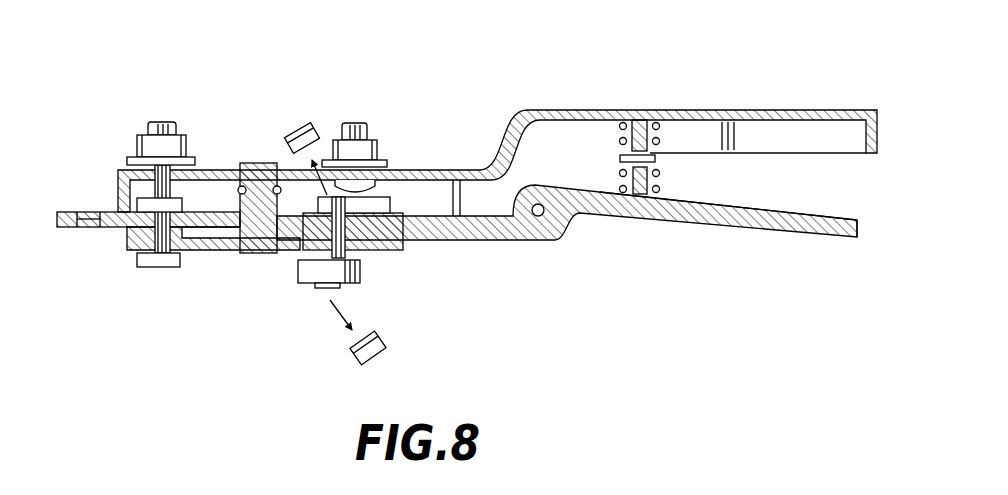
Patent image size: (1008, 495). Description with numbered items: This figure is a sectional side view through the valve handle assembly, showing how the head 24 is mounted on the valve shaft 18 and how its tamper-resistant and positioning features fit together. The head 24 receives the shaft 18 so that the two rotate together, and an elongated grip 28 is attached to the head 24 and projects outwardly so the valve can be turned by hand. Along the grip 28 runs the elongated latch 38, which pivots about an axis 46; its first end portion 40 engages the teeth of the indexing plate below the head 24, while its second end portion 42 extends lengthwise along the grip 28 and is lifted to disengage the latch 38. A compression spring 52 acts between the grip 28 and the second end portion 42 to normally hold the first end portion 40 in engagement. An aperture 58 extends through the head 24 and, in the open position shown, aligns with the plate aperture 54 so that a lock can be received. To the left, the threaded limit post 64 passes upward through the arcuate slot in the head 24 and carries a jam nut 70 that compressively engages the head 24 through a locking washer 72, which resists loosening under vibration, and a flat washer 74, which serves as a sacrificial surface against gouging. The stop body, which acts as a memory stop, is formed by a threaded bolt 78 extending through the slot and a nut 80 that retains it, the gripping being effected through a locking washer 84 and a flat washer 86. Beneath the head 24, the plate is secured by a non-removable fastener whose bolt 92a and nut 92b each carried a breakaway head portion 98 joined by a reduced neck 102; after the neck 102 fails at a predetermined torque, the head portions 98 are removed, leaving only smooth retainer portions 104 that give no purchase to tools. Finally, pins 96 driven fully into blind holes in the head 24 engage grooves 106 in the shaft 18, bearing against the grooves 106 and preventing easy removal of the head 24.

The shaft 18 is at (266, 252).
The head 24 is at (203, 170).
The grip 28 is at (800, 110).
The latch 38 is at (750, 229).
The first end portion 40 is at (392, 238).
The second end portion 42 is at (822, 236).
The axis 46 is at (543, 214).
The compression spring 52 is at (660, 178).
The aperture 54 is at (92, 228).
The aperture 58 is at (100, 212).
The limit post 64 is at (162, 121).
The jam nut 70 is at (130, 140).
The locking washer 72 is at (133, 155).
The flat washer 74 is at (127, 165).
The bolt 78 is at (357, 122).
The nut 80 is at (380, 142).
The locking washer 84 is at (389, 163).
The flat washer 86 is at (378, 186).
The bolt 92a is at (385, 240).
The nut 92b is at (362, 276).
The pin 96 is at (277, 188).
The breakaway head portion 98 is at (290, 128).
The neck 102 is at (325, 290).
The retainer portion 104 is at (318, 205).
The groove 106 is at (250, 252).